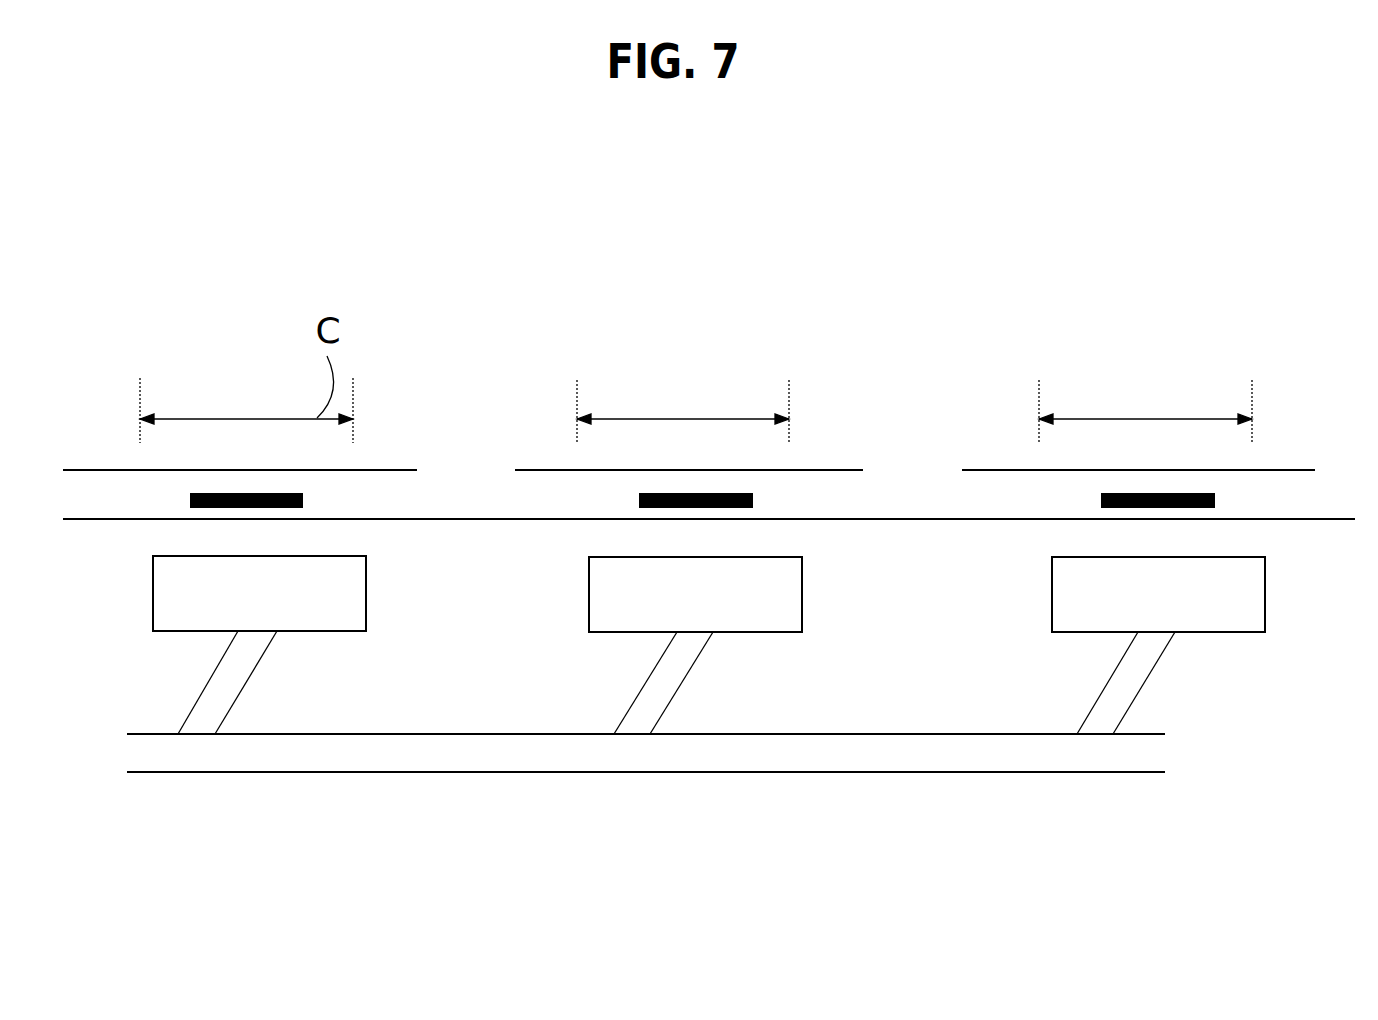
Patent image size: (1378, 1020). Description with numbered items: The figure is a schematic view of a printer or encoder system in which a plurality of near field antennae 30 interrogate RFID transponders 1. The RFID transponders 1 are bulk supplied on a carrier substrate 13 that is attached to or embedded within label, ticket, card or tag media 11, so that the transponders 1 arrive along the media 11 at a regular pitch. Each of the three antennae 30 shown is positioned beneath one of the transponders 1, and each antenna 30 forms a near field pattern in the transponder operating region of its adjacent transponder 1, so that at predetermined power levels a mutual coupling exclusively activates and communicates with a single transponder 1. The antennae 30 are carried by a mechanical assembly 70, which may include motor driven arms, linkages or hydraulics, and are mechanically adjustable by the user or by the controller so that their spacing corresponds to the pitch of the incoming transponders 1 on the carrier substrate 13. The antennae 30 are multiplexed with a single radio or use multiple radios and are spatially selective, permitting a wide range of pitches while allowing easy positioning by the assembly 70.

The RFID transponder 1 is at (1215, 507).
The media 11 is at (393, 469).
The carrier substrate 13 is at (103, 519).
The near field coupler 30 is at (366, 605).
The mechanical assembly 70 is at (478, 773).